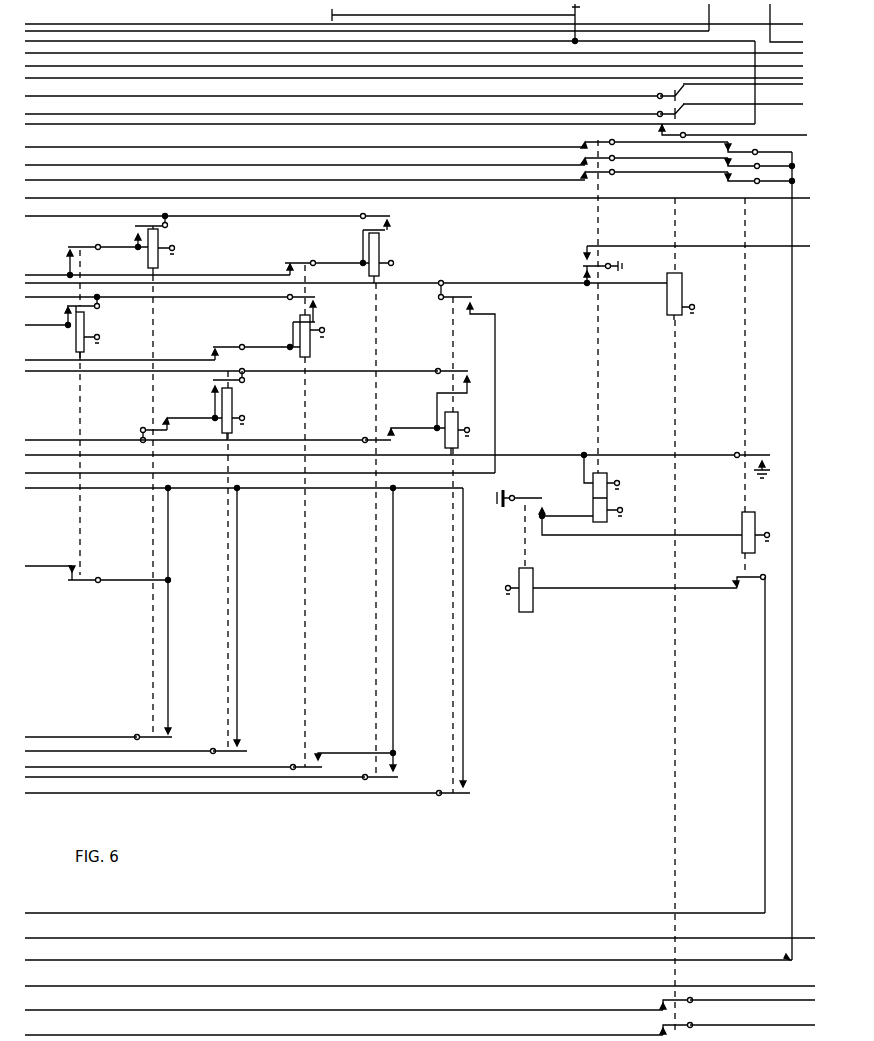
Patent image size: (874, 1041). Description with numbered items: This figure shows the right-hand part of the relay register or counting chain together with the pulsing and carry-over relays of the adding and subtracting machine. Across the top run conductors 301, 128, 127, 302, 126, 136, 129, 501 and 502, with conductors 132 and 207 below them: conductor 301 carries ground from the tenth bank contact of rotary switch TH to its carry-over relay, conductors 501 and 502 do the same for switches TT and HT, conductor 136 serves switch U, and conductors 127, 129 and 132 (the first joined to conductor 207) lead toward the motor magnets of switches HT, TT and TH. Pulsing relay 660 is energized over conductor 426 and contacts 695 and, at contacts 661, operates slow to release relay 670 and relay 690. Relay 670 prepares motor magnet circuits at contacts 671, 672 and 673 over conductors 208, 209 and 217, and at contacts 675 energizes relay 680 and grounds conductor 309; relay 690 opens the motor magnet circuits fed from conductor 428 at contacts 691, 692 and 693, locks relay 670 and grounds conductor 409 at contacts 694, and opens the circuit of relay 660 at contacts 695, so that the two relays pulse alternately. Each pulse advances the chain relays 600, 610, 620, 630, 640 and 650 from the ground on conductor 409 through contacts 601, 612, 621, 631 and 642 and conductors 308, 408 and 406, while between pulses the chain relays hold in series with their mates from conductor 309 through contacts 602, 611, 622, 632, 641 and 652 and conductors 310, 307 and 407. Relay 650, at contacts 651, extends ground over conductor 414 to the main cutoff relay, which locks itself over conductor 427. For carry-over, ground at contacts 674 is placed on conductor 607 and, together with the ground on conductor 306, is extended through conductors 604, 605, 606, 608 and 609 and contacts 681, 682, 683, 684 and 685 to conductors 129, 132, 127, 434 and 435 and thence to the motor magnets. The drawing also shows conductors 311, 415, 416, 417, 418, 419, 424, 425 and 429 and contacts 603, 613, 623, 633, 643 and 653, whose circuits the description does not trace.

The conductor 126 is at (208, 66).
The conductor 127 is at (132, 41).
The conductor 128 is at (99, 12).
The conductor 129 is at (270, 96).
The conductor 132 is at (55, 114).
The conductor 136 is at (242, 78).
The conductor 207 is at (100, 103).
The conductor 208 is at (59, 147).
The conductor 209 is at (59, 165).
The conductor 217 is at (60, 180).
The conductor 301 is at (57, 24).
The conductor 302 is at (172, 53).
The conductor 306 is at (105, 198).
The conductor 307 is at (148, 213).
The conductor 308 is at (58, 275).
The conductor 309 is at (125, 284).
The conductor 310 is at (53, 299).
The conductor 311 is at (53, 324).
The conductor 406 is at (60, 360).
The conductor 407 is at (61, 373).
The conductor 408 is at (59, 440).
The conductor 409 is at (59, 455).
The conductor 414 is at (59, 473).
The conductor 415 is at (61, 490).
The conductor 416 is at (59, 566).
The conductor 417 is at (52, 725).
The conductor 418 is at (96, 726).
The conductor 419 is at (118, 767).
The conductor 424 is at (70, 778).
The conductor 425 is at (83, 793).
The conductor 426 is at (395, 745).
The conductor 427 is at (785, 937).
The conductor 428 is at (408, 952).
The conductor 429 is at (797, 984).
The conductor 434 is at (344, 1000).
The conductor 435 is at (344, 1025).
The conductor 501 is at (439, 15).
The conductor 502 is at (770, 31).
The relay 600 is at (86, 348).
The contacts 601 is at (80, 252).
The contacts 602 is at (90, 318).
The relay contact 603 is at (80, 566).
The conductor 604 is at (768, 86).
The conductor 605 is at (768, 106).
The conductor 606 is at (767, 124).
The conductor 607 is at (786, 242).
The conductor 608 is at (798, 1002).
The conductor 609 is at (800, 1026).
The relay 610 is at (159, 235).
The contacts 611 is at (136, 231).
The contacts 612 is at (159, 421).
The relay contact 613 is at (172, 735).
The relay 620 is at (233, 400).
The contacts 621 is at (208, 354).
The contacts 622 is at (211, 394).
The relay contact 623 is at (241, 745).
The relay 630 is at (318, 338).
The contacts 631 is at (283, 270).
The contacts 632 is at (316, 307).
The relay contact 633 is at (312, 760).
The relay 640 is at (381, 247).
The contacts 641 is at (393, 222).
The contacts 642 is at (385, 435).
The relay contact 643 is at (399, 772).
The relay 650 is at (457, 425).
The contacts 651 is at (477, 303).
The contacts 652 is at (478, 378).
The relay contact 653 is at (475, 778).
The pulsing relay 660 is at (535, 578).
The contacts 661 is at (560, 501).
The slow to release relay 670 is at (607, 475).
The contacts 671 is at (580, 148).
The contacts 672 is at (580, 164).
The contacts 673 is at (580, 179).
The contacts 674 is at (576, 262).
The contacts 675 is at (574, 275).
The relay 680 is at (688, 272).
The contacts 681 is at (685, 94).
The contacts 682 is at (685, 114).
The contacts 683 is at (661, 133).
The contacts 684 is at (660, 1007).
The contacts 685 is at (660, 1028).
The pulsing relay 690 is at (742, 514).
The contacts 691 is at (722, 150).
The contacts 692 is at (723, 167).
The contacts 693 is at (718, 179).
The contacts 694 is at (779, 455).
The contacts 695 is at (745, 583).